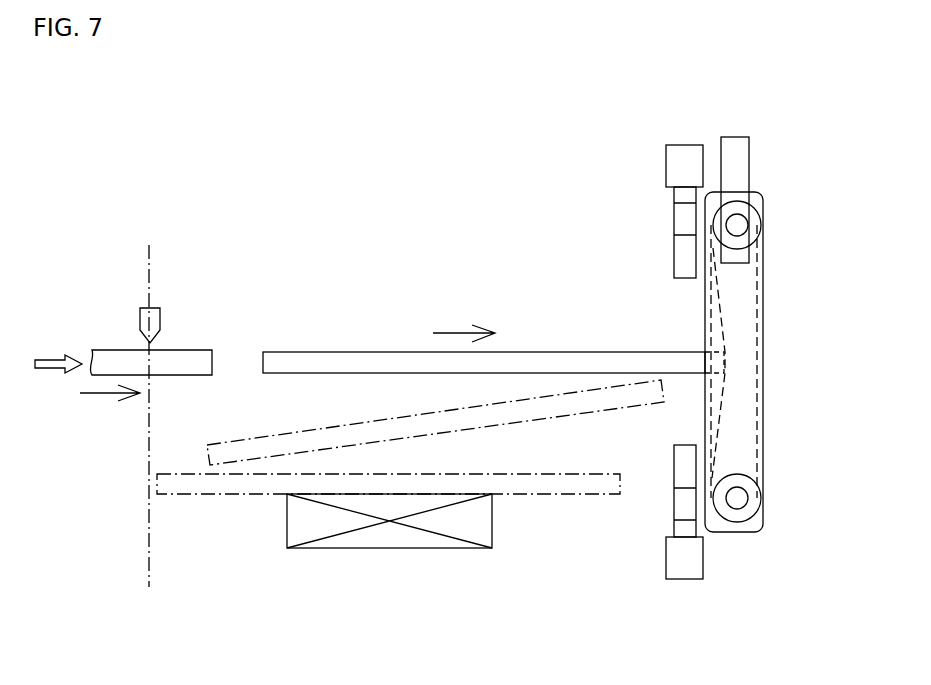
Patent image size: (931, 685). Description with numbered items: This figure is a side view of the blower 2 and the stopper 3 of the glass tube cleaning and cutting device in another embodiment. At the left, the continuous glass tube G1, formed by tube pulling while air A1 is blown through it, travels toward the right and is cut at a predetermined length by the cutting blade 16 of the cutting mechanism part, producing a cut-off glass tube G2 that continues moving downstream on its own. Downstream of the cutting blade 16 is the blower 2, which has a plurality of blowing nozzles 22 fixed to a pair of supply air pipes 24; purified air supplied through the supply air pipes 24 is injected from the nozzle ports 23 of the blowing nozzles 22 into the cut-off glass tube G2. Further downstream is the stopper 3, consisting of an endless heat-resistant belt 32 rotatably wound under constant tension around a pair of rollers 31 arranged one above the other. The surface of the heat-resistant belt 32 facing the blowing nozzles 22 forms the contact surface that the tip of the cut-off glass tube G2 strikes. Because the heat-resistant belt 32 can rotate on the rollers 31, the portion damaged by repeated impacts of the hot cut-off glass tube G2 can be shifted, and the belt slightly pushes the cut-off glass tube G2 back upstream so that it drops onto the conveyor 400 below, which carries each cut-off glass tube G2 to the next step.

The blower 2 is at (677, 94).
The stopper 3 is at (762, 106).
The cutting blade 16 is at (161, 318).
The blowing nozzle 22 is at (682, 222).
The nozzle port 23 is at (685, 278).
The supply air pipe 24 is at (680, 168).
The roller 31 is at (737, 228).
The heat-resistant belt 32 is at (760, 342).
The conveyor 400 is at (390, 548).
The continuous glass tube G1 is at (120, 350).
The cut-off glass tube G2 is at (348, 352).
The air A1 is at (58, 352).